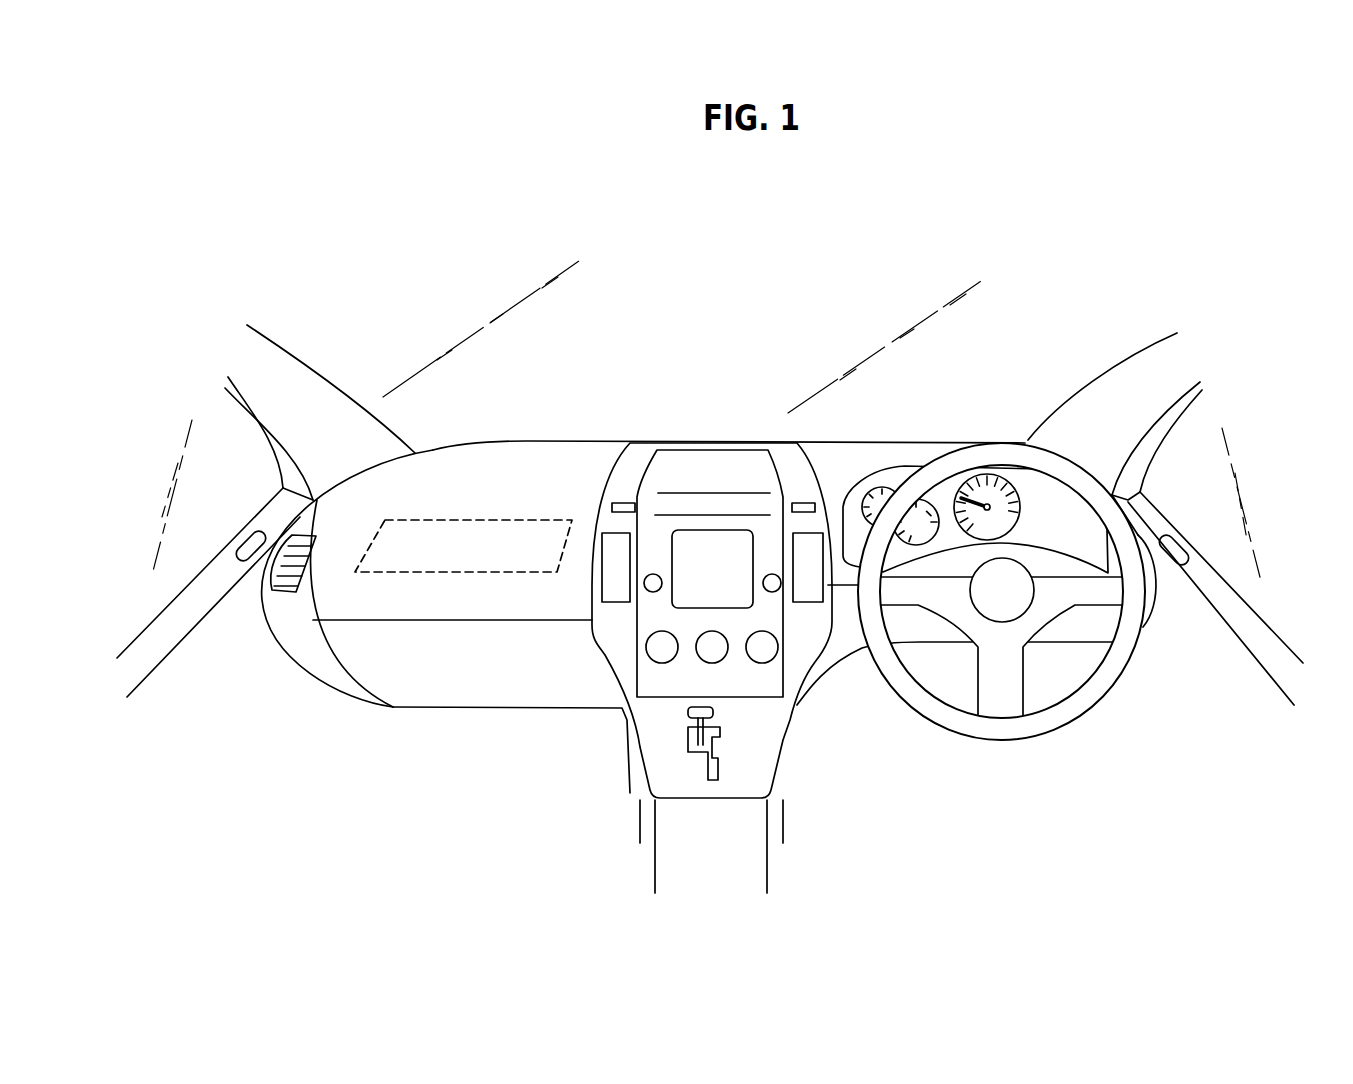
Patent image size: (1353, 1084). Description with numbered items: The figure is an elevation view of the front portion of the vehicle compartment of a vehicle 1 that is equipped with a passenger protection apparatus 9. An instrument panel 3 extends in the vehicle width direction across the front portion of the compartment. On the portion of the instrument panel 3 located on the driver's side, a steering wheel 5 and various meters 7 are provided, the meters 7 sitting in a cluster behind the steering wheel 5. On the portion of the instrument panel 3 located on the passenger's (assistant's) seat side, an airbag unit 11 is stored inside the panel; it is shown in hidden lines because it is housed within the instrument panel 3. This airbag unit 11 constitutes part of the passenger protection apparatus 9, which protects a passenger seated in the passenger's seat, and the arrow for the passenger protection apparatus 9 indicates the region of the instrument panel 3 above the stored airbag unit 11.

The vehicle 1 is at (1098, 252).
The instrument panel 3 is at (572, 470).
The steering wheel 5 is at (980, 457).
The meters 7 is at (862, 498).
The passenger protection apparatus 9 is at (527, 476).
The airbag unit 11 is at (470, 520).